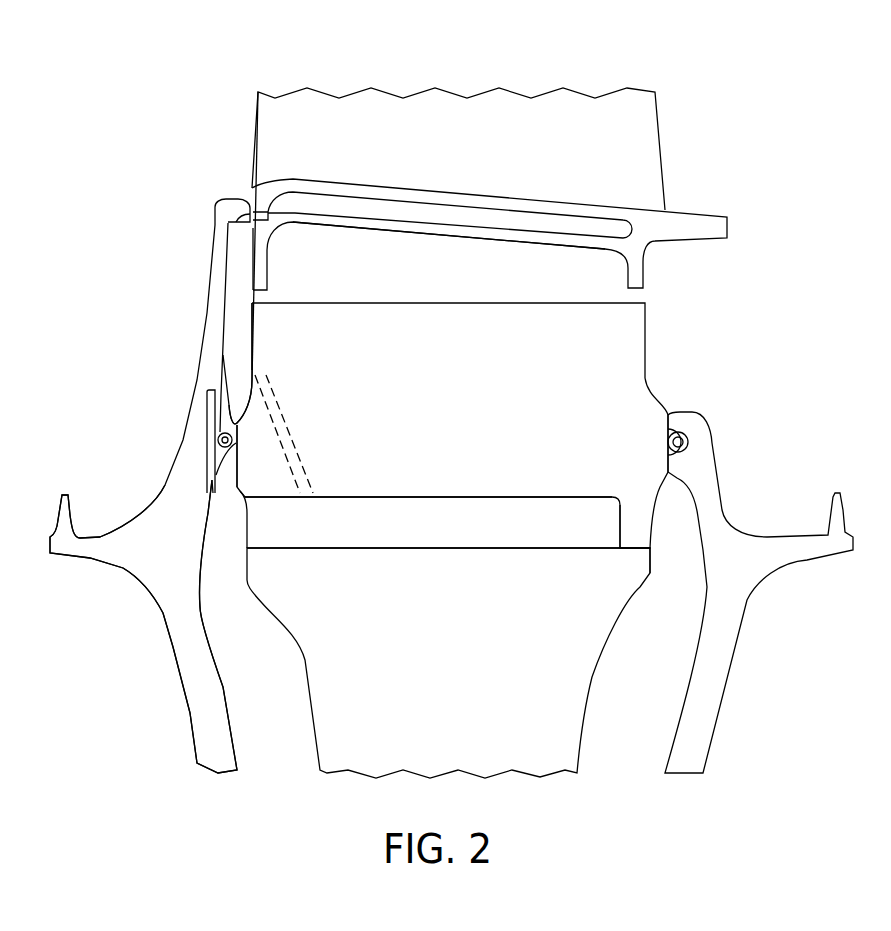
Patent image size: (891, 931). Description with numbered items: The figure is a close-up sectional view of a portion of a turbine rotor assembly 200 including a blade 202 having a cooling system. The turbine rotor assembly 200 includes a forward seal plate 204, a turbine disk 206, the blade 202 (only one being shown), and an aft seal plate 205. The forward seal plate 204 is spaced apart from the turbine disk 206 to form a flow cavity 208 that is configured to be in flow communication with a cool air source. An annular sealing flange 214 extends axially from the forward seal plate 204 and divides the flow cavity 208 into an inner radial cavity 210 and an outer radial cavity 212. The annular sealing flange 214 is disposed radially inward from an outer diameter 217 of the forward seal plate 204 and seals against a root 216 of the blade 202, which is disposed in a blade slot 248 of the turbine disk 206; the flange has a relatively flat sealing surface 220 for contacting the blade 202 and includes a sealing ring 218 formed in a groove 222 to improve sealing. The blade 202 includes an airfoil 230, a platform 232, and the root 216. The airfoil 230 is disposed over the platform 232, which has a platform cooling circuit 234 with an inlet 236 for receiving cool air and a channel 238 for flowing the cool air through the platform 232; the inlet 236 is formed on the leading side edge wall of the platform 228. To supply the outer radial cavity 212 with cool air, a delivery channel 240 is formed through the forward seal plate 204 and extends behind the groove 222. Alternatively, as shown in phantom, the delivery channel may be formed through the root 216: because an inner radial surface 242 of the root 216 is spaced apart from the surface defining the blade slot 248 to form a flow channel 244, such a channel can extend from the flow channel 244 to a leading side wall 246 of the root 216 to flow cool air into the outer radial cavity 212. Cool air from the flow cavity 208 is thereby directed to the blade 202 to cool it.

The turbine rotor assembly 200 is at (770, 134).
The blade 202 is at (652, 162).
The forward seal plate 204 is at (213, 323).
The aft seal plate 205 is at (733, 608).
The turbine disk 206 is at (307, 653).
The flow cavity 208 is at (223, 550).
The inner radial cavity 210 is at (297, 752).
The outer radial cavity 212 is at (236, 307).
The annular sealing flange 214 is at (233, 422).
The root 216 is at (640, 352).
The outer diameter 217 is at (237, 199).
The sealing ring 218 is at (222, 438).
The sealing surface 220 is at (240, 422).
The groove 222 is at (237, 453).
The platform leading side edge wall 228 is at (253, 280).
The airfoil 230 is at (268, 129).
The platform 232 is at (723, 226).
The platform cooling circuit 234 is at (313, 200).
The inlet 236 is at (247, 222).
The channel 238 is at (466, 215).
The delivery channel 240 is at (210, 392).
The inner radial surface 242 is at (413, 497).
The flow channel 244 is at (531, 538).
The leading side wall 246 is at (250, 353).
The blade slot 248 is at (588, 538).